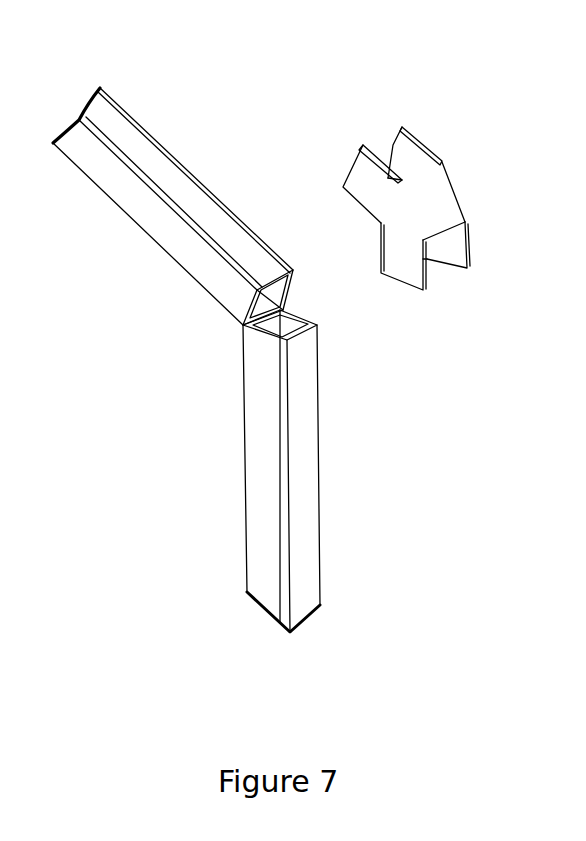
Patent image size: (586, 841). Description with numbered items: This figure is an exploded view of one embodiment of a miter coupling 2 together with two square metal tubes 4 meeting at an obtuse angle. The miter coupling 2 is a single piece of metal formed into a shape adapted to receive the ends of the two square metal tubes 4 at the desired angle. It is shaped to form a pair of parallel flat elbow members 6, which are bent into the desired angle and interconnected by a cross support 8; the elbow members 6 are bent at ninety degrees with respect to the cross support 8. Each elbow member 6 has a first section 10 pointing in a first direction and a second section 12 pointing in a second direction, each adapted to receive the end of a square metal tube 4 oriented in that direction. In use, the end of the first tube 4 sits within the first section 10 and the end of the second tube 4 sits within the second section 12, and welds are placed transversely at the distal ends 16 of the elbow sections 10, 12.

The miter coupling 2 is at (421, 194).
The square metal tube 4 is at (150, 213).
The elbow member 6 is at (450, 252).
The cross support 8 is at (437, 200).
The first section 10 is at (448, 242).
The second section 12 is at (405, 152).
The distal end 16 is at (393, 143).